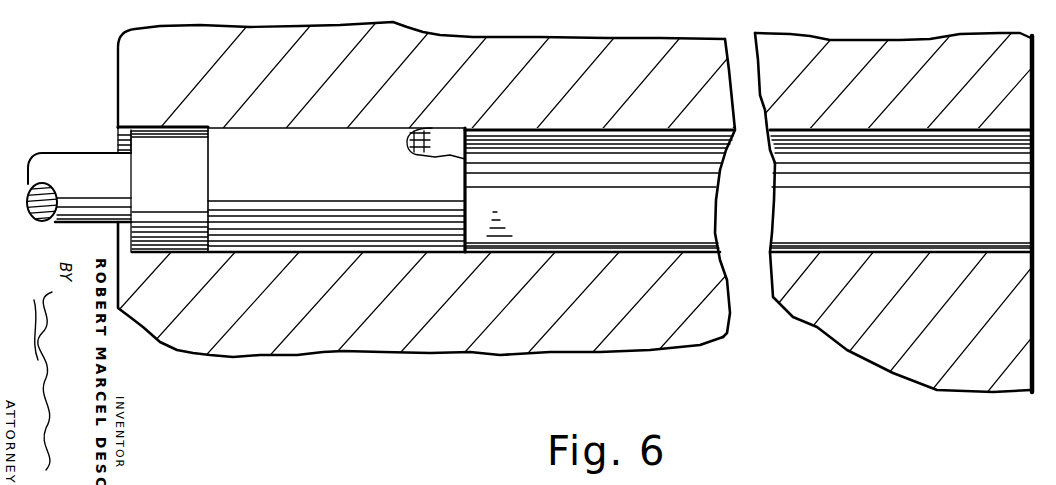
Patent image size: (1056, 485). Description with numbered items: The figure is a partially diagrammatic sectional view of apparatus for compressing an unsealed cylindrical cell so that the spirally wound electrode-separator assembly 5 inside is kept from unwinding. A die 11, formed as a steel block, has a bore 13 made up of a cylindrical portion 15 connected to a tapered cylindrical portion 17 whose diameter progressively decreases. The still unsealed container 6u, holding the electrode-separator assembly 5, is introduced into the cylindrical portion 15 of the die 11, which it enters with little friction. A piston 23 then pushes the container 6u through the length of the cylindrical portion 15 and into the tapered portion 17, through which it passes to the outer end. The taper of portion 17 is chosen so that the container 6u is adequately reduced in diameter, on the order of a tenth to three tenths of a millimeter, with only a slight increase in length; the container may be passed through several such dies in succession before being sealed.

The die 11 is at (316, 77).
The cylindrical portion 15 is at (321, 254).
The bore 13 is at (593, 219).
The tapered cylindrical portion 17 is at (650, 247).
The container 6u is at (242, 190).
The piston 23 is at (155, 148).
The electrode-separator assembly 5 is at (418, 129).